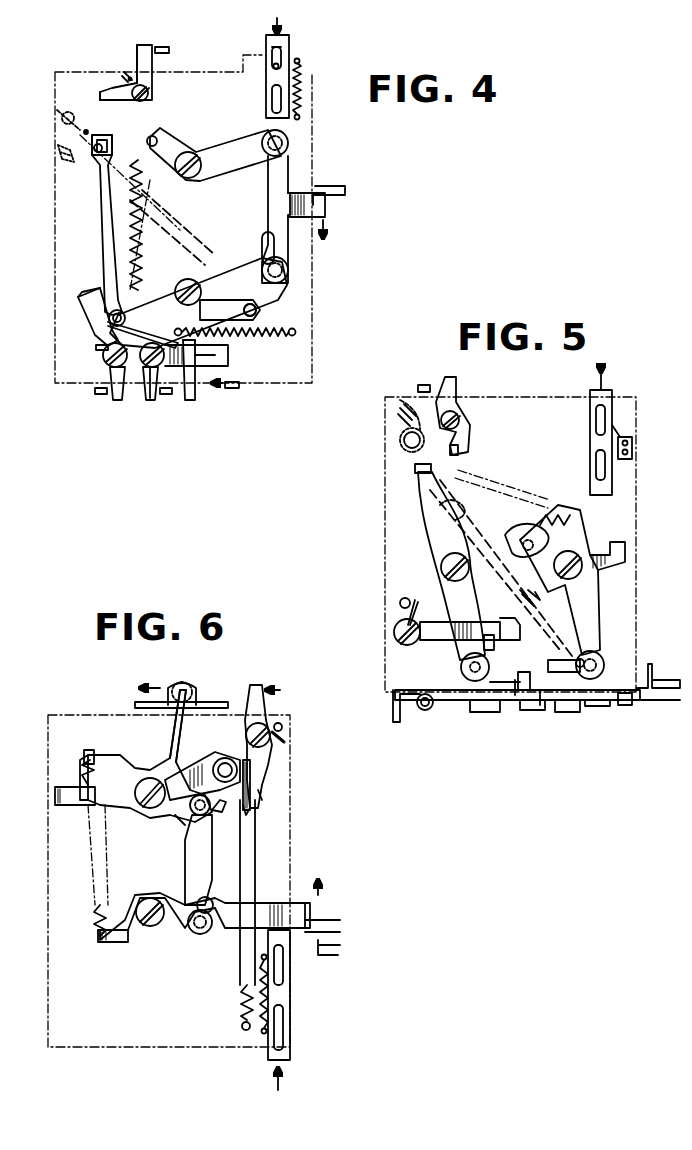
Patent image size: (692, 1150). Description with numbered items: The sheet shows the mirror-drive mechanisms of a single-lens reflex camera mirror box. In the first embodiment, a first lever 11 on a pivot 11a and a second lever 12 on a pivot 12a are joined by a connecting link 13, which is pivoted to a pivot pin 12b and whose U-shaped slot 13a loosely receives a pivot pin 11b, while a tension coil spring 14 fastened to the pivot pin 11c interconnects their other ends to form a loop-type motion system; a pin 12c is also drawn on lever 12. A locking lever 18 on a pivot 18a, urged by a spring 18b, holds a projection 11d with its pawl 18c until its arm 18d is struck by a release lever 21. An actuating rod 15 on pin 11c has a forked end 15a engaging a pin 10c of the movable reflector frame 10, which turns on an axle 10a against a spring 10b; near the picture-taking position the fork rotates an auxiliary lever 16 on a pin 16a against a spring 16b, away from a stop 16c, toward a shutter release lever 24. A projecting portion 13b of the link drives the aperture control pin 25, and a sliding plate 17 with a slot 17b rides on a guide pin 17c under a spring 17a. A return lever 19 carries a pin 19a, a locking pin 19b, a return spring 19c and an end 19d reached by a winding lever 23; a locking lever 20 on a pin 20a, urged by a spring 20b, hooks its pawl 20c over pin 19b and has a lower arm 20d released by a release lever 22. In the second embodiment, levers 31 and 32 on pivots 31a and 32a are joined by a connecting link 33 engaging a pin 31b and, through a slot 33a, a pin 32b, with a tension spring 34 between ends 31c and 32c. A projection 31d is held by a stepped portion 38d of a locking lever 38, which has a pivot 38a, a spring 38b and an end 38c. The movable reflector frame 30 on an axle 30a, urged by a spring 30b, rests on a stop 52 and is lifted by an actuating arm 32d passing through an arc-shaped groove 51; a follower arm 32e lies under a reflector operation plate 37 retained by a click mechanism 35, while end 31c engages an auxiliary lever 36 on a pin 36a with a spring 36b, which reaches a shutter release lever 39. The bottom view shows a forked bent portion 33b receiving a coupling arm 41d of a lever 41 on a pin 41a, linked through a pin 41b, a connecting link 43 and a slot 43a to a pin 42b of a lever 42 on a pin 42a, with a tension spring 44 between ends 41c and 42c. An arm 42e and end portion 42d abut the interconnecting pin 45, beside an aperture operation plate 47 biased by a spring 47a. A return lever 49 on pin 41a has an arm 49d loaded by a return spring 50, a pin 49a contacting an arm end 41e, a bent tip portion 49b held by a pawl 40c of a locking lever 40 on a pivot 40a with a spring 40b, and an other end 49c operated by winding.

In FIG. 4, the movable reflector frame 10 is at (200, 250).
In FIG. 4, the axle 10a is at (66, 110).
In FIG. 4, the spring 10b is at (55, 145).
In FIG. 4, the pin 10c is at (100, 140).
In FIG. 4, the first lever 11 is at (232, 282).
In FIG. 4, the pivot 11a is at (178, 290).
In FIG. 4, the pivot pin 11b is at (262, 246).
In FIG. 4, the pivot pin 11c is at (110, 305).
In FIG. 4, the projection 11d is at (108, 335).
In FIG. 4, the second lever 12 is at (240, 150).
In FIG. 4, the pivot 12a is at (192, 178).
In FIG. 4, the pivot pin 12b is at (290, 143).
In FIG. 4, the link pin 12c is at (163, 128).
In FIG. 4, the connecting link 13 is at (270, 184).
In FIG. 4, the slot 13a is at (290, 262).
In FIG. 4, the projecting portion 13b is at (326, 210).
In FIG. 4, the tension coil spring 14 is at (138, 240).
In FIG. 4, the actuating rod 15 is at (103, 213).
In FIG. 4, the forked end 15a is at (95, 160).
In FIG. 4, the auxiliary lever 16 is at (140, 52).
In FIG. 4, the pin 16a is at (148, 93).
In FIG. 4, the spring 16b is at (108, 98).
In FIG. 4, the stop 16c is at (128, 76).
In FIG. 4, the sliding plate 17 is at (268, 84).
In FIG. 4, the spring 17a is at (300, 92).
In FIG. 4, the slide slot 17b is at (280, 48).
In FIG. 4, the guide pin 17c is at (278, 64).
In FIG. 4, the locking lever 18 is at (90, 312).
In FIG. 4, the pivot 18a is at (106, 365).
In FIG. 4, the spring 18b is at (103, 352).
In FIG. 4, the pawl 18c is at (78, 297).
In FIG. 4, the arm 18d is at (115, 400).
In FIG. 4, the return lever 19 is at (250, 305).
In FIG. 4, the pin 19a is at (258, 308).
In FIG. 4, the locking pin 19b is at (198, 350).
In FIG. 4, the return spring 19c is at (250, 332).
In FIG. 4, the end 19d is at (193, 395).
In FIG. 4, the locking lever 20 is at (230, 360).
In FIG. 4, the pin 20a is at (148, 344).
In FIG. 4, the spring 20b is at (146, 385).
In FIG. 4, the pawl 20c is at (230, 358).
In FIG. 4, the detent foot 20d is at (152, 402).
In FIG. 4, the release lever 21 is at (100, 396).
In FIG. 4, the release lever 22 is at (166, 396).
In FIG. 4, the winding lever 23 is at (233, 388).
In FIG. 4, the shutter release lever 24 is at (169, 50).
In FIG. 4, the aperture control pin 25 is at (330, 192).
In FIG. 5, the movable reflector frame 30 is at (540, 590).
In FIG. 5, the axle 30a is at (400, 442).
In FIG. 5, the spring 30b is at (418, 384).
In FIG. 5, the lever 31 is at (442, 540).
In FIG. 5, the pivot 31a is at (442, 567).
In FIG. 5, the pin 31b is at (462, 668).
In FIG. 5, the end portion 31c is at (415, 468).
In FIG. 5, the projection 31d is at (504, 645).
In FIG. 5, the lever 32 is at (588, 602).
In FIG. 5, the pivot 32a is at (582, 572).
In FIG. 5, the pin 32b is at (600, 658).
In FIG. 5, the end 32c is at (560, 514).
In FIG. 5, the actuating arm 32d is at (432, 520).
In FIG. 5, the follower arm 32e is at (627, 544).
In FIG. 5, the connecting link 33 is at (495, 705).
In FIG. 5, the slot 33a is at (580, 668).
In FIG. 5, the laterally bent portion 33b is at (524, 700).
In FIG. 6, the laterally bent portion 33b is at (195, 690).
In FIG. 5, the tension spring 34 is at (504, 496).
In FIG. 5, the click mechanism 35 is at (632, 448).
In FIG. 5, the auxiliary lever 36 is at (456, 390).
In FIG. 5, the pin 36a is at (458, 418).
In FIG. 5, the spring 36b is at (460, 450).
In FIG. 5, the reflector operation plate 37 is at (590, 405).
In FIG. 5, the locking lever 38 is at (440, 622).
In FIG. 5, the pivot 38a is at (394, 634).
In FIG. 5, the spring 38b is at (400, 608).
In FIG. 5, the bar end 38c is at (522, 626).
In FIG. 5, the stepped portion 38d is at (485, 618).
In FIG. 5, the shutter release lever 39 is at (420, 385).
In FIG. 6, the locking lever 40 is at (256, 685).
In FIG. 6, the pivot 40a is at (265, 722).
In FIG. 6, the spring 40b is at (284, 742).
In FIG. 6, the pawl 40c is at (262, 800).
In FIG. 6, the lever 41 is at (188, 775).
In FIG. 6, the pin 41a is at (148, 810).
In FIG. 6, the pin 41b is at (200, 823).
In FIG. 6, the end 41c is at (84, 762).
In FIG. 5, the coupling arm 41d is at (541, 706).
In FIG. 6, the coupling arm 41d is at (170, 740).
In FIG. 6, the arm end 41e is at (216, 798).
In FIG. 6, the lever 42 is at (175, 942).
In FIG. 6, the pin 42a is at (152, 926).
In FIG. 6, the pin 42b is at (202, 935).
In FIG. 6, the end 42c is at (100, 942).
In FIG. 5, the end portion 42d is at (634, 698).
In FIG. 6, the end portion 42d is at (312, 915).
In FIG. 6, the arm 42e is at (265, 905).
In FIG. 6, the connecting link 43 is at (185, 865).
In FIG. 6, the slot 43a is at (208, 898).
In FIG. 6, the tension spring 44 is at (82, 828).
In FIG. 5, the interconnecting pin 45 is at (658, 674).
In FIG. 6, the interconnecting pin 45 is at (329, 954).
In FIG. 6, the aperture operation plate 47 is at (280, 990).
In FIG. 6, the spring 47a is at (262, 1030).
In FIG. 6, the return lever 49 is at (200, 760).
In FIG. 6, the pin 49a is at (223, 760).
In FIG. 6, the bent tip portion 49b is at (252, 780).
In FIG. 5, the other end 49c is at (393, 712).
In FIG. 6, the other end 49c is at (55, 796).
In FIG. 6, the arm 49d is at (252, 795).
In FIG. 6, the return spring 50 is at (238, 980).
In FIG. 5, the arc-shaped groove 51 is at (528, 533).
In FIG. 5, the stop 52 is at (505, 554).